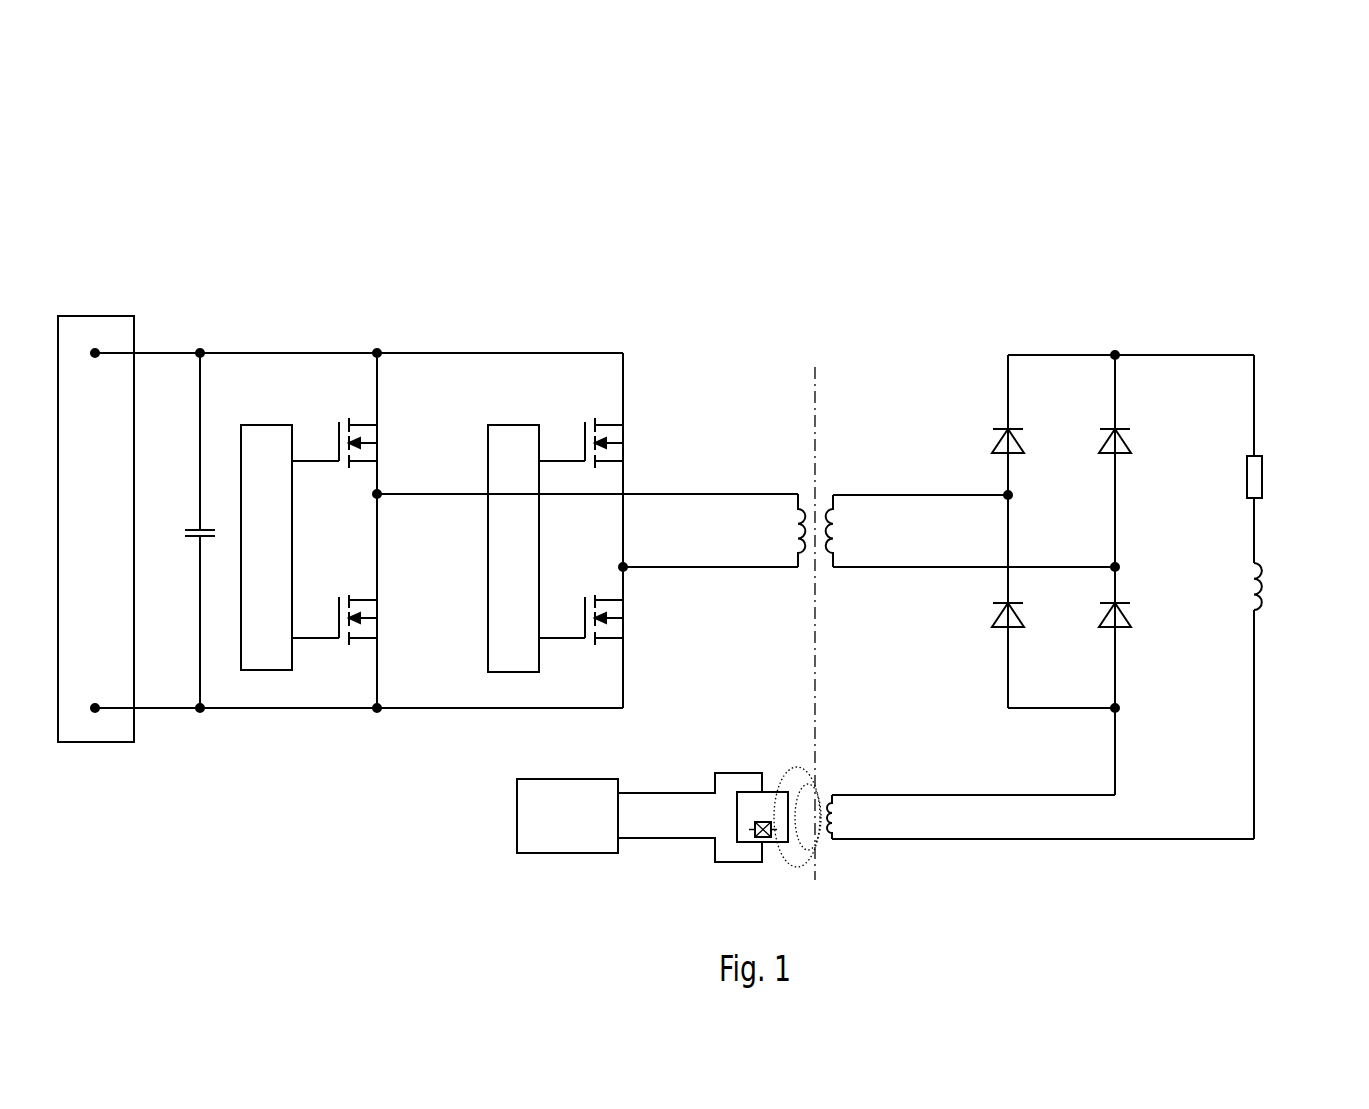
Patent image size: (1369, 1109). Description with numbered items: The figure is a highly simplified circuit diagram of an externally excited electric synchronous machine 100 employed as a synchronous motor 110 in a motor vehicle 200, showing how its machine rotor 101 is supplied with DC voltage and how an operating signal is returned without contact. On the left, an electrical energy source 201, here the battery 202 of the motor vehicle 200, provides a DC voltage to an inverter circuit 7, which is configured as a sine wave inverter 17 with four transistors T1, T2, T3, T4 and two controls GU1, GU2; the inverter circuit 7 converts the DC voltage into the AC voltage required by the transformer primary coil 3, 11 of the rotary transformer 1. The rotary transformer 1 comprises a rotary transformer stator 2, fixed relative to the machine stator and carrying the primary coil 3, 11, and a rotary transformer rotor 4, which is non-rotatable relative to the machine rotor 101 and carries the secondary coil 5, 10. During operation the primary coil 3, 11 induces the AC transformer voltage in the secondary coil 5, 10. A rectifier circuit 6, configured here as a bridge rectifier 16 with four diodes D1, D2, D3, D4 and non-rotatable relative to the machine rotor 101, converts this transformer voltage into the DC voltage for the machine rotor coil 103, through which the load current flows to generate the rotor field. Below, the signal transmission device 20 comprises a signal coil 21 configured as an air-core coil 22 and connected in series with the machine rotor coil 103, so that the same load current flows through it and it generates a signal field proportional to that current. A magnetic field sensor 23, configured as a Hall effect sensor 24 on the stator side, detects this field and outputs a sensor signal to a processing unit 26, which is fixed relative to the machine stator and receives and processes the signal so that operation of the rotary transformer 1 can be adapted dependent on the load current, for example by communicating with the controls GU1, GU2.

The rotary transformer 1 is at (968, 210).
The rotary transformer stator 2 is at (718, 290).
The primary coil 3 is at (757, 530).
The primary coil 11 is at (793, 524).
The rotary transformer rotor 4 is at (887, 292).
The secondary coil 5 is at (873, 531).
The secondary coil 10 is at (838, 526).
The rectifier circuit 6 is at (1123, 507).
The bridge rectifier 16 is at (1050, 313).
The inverter circuit 7 is at (475, 466).
The sine wave inverter 17 is at (392, 312).
The signal transmission device 20 is at (464, 813).
The signal coil 21 is at (879, 817).
The air-core coil 22 is at (836, 815).
The magnetic field sensor 23 is at (785, 868).
The Hall effect sensor 24 is at (775, 843).
The processing unit 26 is at (556, 833).
The externally excited electric synchronous machine 100 is at (1092, 453).
The synchronous motor 110 is at (1220, 165).
The machine rotor 101 is at (1242, 313).
The machine rotor coil 103 is at (1264, 585).
The motor vehicle 200 is at (162, 182).
The electrical energy source 201 is at (108, 491).
The battery 202 is at (93, 323).
The transistor T1 is at (400, 442).
The transistor T2 is at (646, 444).
The transistor T3 is at (400, 618).
The transistor T4 is at (646, 620).
The diode D1 is at (1023, 436).
The diode D2 is at (1130, 436).
The diode D3 is at (1023, 610).
The diode D4 is at (1130, 610).
The control GU1 is at (286, 547).
The control GU2 is at (533, 547).